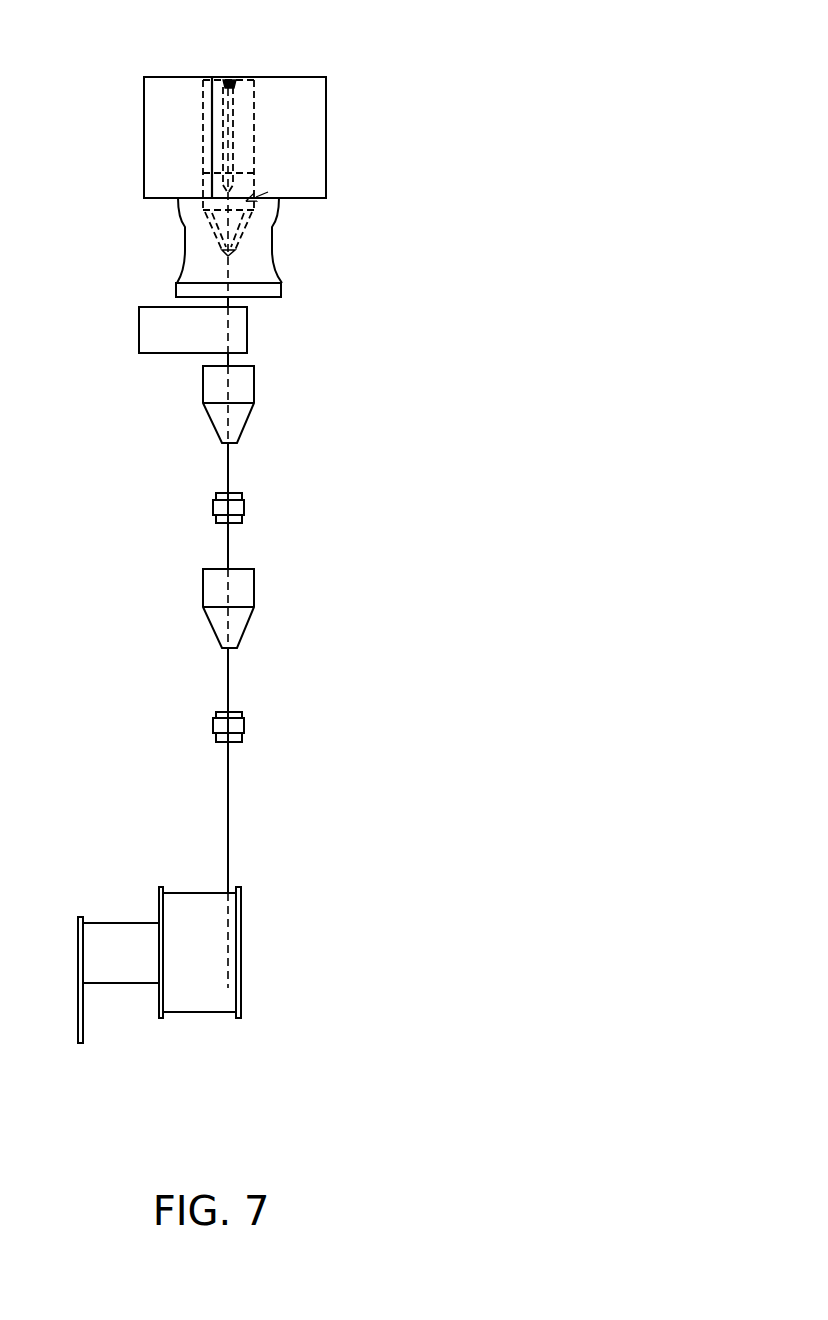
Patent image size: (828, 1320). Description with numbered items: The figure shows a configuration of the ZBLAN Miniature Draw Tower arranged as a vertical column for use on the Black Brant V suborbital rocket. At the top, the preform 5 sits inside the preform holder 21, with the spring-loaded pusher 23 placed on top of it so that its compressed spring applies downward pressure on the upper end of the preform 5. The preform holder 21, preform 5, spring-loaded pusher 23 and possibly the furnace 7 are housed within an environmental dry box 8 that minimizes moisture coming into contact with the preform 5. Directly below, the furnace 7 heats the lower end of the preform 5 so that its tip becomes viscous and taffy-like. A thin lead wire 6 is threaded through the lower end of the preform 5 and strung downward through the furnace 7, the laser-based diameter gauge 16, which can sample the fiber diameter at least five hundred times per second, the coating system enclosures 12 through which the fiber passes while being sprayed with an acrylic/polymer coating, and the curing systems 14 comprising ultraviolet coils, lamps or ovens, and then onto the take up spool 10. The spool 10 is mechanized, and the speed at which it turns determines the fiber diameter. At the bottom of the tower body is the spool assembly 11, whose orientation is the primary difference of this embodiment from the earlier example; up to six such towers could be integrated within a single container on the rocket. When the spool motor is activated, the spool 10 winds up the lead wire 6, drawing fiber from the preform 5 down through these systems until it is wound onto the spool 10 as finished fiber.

The preform 5 is at (225, 125).
The lead wire 6 is at (227, 817).
The furnace 7 is at (273, 252).
The environmental dry box 8 is at (286, 110).
The take up spool 10 is at (186, 923).
The spool assembly 11 is at (241, 1053).
The coating system enclosure 12 is at (228, 585).
The curing system 14 is at (244, 725).
The laser-based diameter gauge 16 is at (213, 338).
The preform holder 21 is at (202, 97).
The spring-loaded pusher 23 is at (236, 82).